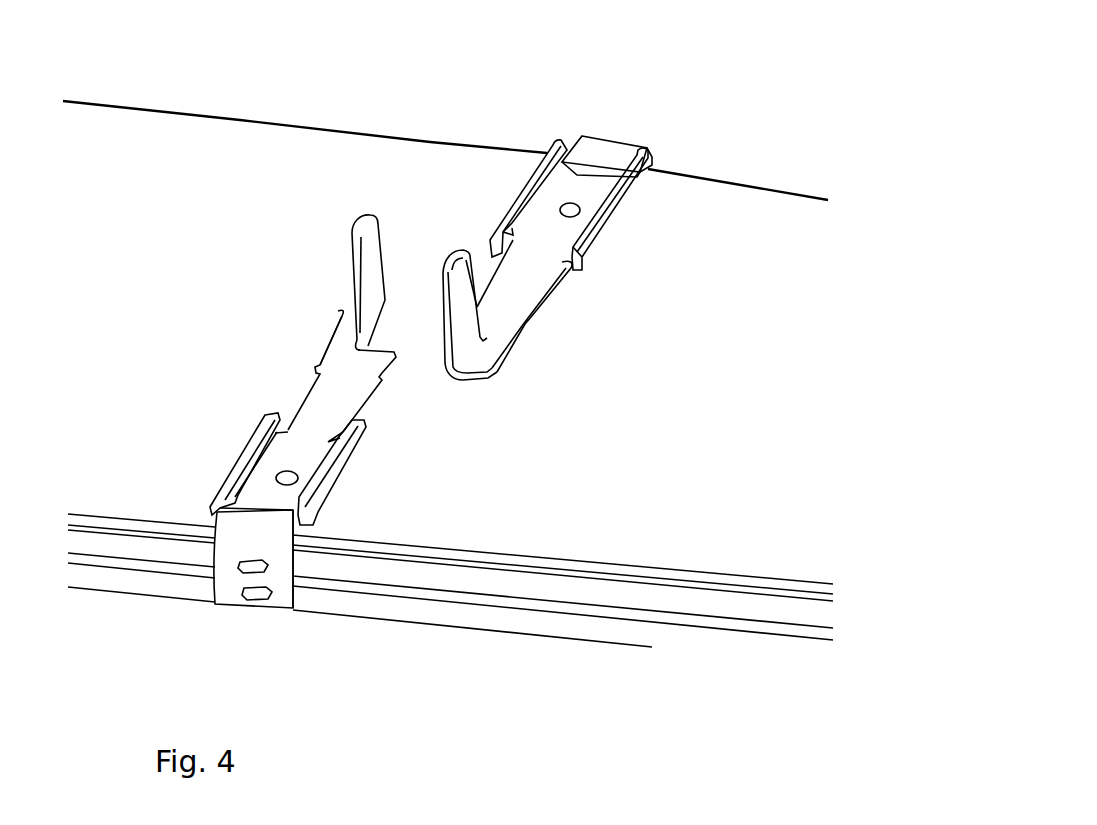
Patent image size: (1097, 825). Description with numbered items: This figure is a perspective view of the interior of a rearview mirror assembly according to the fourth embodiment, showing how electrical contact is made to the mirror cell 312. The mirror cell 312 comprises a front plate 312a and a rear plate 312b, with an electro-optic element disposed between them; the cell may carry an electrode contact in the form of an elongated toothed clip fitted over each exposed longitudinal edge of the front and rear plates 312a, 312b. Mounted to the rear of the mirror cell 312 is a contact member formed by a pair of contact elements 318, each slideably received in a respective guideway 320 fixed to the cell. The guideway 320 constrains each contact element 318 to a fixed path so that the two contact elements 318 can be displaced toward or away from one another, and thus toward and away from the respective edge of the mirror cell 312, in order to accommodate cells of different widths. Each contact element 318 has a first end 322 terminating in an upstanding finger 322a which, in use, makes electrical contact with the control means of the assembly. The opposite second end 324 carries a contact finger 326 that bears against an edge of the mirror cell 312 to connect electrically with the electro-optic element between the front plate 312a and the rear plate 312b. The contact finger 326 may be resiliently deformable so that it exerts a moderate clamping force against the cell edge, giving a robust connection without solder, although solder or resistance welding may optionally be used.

The mirror cell 312 is at (790, 636).
The front plate 312a is at (635, 635).
The rear plate 312b is at (817, 613).
The contact element 318 is at (327, 397).
The guideway 320 is at (323, 500).
The first end 322 is at (342, 316).
The upstanding finger 322a is at (369, 236).
The second end 324 is at (237, 542).
The contact finger 326 is at (280, 590).